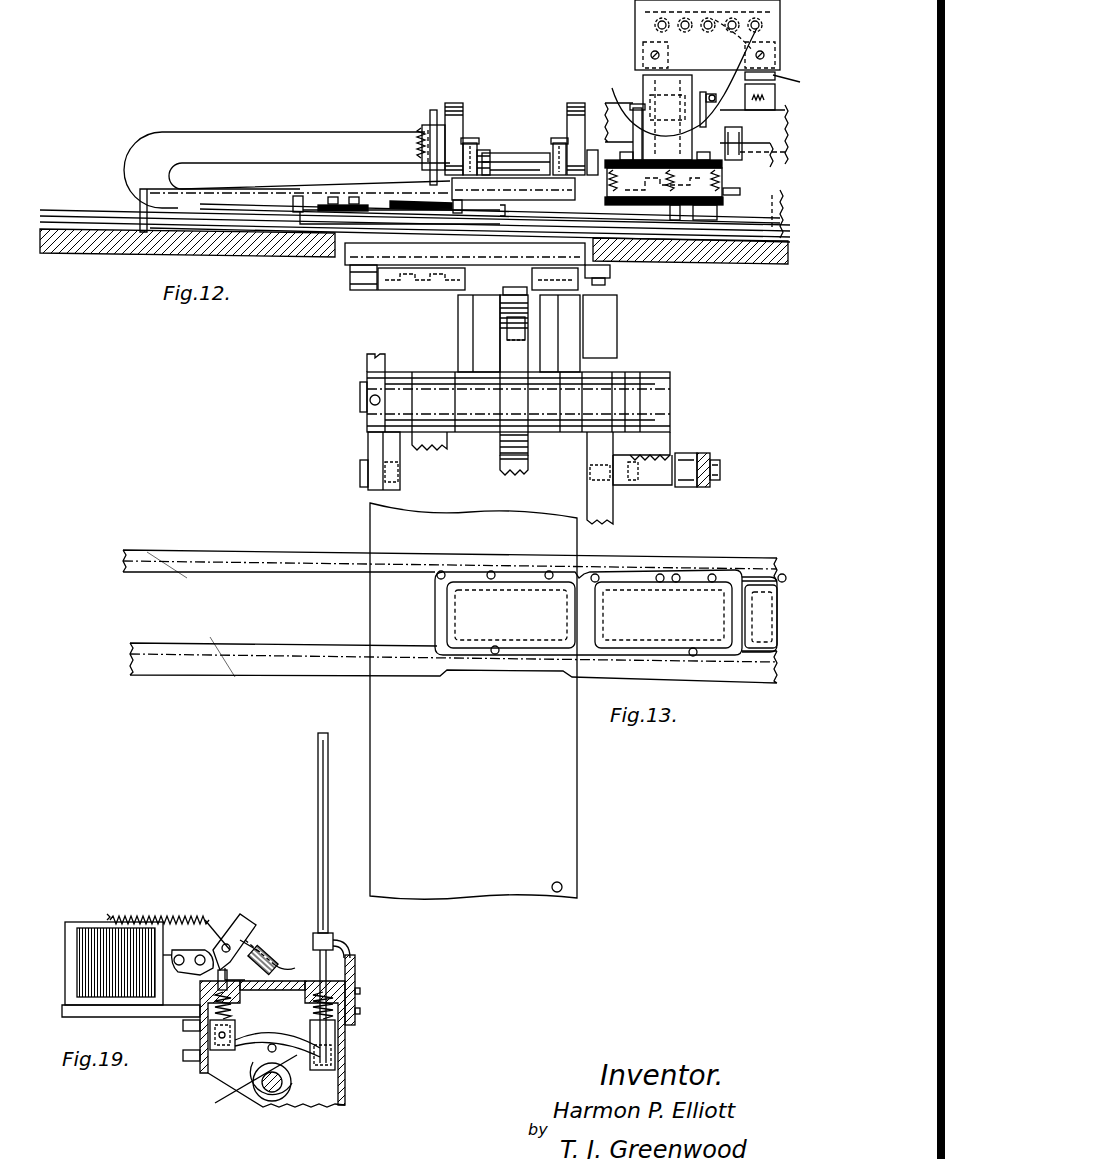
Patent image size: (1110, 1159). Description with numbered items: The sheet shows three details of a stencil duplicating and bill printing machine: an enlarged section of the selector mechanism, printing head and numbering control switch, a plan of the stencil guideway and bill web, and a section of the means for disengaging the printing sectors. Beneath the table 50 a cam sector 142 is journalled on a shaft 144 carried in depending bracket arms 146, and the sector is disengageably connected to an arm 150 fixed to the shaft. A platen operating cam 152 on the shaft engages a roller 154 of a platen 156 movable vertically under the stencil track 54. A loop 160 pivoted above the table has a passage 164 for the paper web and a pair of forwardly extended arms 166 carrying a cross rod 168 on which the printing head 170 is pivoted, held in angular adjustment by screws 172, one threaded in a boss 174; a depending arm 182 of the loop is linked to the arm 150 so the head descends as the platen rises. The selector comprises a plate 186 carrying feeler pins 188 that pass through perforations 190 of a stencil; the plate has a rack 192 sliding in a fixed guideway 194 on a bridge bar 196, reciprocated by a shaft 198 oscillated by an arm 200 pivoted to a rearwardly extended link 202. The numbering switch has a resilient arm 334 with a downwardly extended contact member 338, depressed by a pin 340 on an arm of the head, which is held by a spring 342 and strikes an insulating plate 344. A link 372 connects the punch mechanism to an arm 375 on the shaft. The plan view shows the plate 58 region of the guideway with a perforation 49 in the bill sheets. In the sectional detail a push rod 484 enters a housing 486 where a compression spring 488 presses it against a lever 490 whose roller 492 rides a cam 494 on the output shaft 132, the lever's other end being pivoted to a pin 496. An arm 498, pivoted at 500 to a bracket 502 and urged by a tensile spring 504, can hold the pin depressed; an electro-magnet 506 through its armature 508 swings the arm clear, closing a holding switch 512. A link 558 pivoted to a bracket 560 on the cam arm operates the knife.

In FIG. 13, the perforation 49 is at (563, 886).
In FIG. 12, the table 50 is at (76, 245).
In FIG. 12, the stencil track 54 is at (72, 215).
In FIG. 13, the stencil track 54 is at (228, 648).
In FIG. 12, the plate 58 is at (538, 227).
In FIG. 13, the plate 58 is at (587, 574).
In FIG. 19, the output shaft 132 is at (266, 1090).
In FIG. 12, the cam sector 142 is at (605, 511).
In FIG. 12, the shaft 144 is at (358, 398).
In FIG. 12, the bracket arms 146 is at (470, 328).
In FIG. 12, the arm 150 is at (517, 459).
In FIG. 12, the platen operating cam 152 is at (513, 328).
In FIG. 12, the roller 154 is at (507, 290).
In FIG. 12, the platen 156 is at (363, 252).
In FIG. 12, the loop 160 is at (212, 142).
In FIG. 12, the passage 164 is at (247, 168).
In FIG. 12, the arms 166 is at (457, 104).
In FIG. 12, the cross rod 168 is at (518, 160).
In FIG. 12, the printing head 170 is at (540, 192).
In FIG. 12, the screws 172 is at (468, 143).
In FIG. 12, the boss 174 is at (478, 150).
In FIG. 12, the depending arm 182 is at (530, 330).
In FIG. 12, the plate 186 is at (740, 185).
In FIG. 12, the feeler pins 188 is at (717, 216).
In FIG. 13, the perforations 190 is at (492, 572).
In FIG. 12, the rack 192 is at (670, 73).
In FIG. 12, the guideway 194 is at (690, 92).
In FIG. 12, the bridge bar 196 is at (773, 193).
In FIG. 12, the shaft 198 is at (684, 84).
In FIG. 12, the arm 200 is at (710, 115).
In FIG. 12, the link 202 is at (735, 102).
In FIG. 12, the resilient arm 334 is at (373, 205).
In FIG. 12, the contact member 338 is at (448, 214).
In FIG. 12, the pin 340 is at (434, 125).
In FIG. 12, the spring 342 is at (418, 135).
In FIG. 12, the insulating plate 344 is at (405, 203).
In FIG. 12, the link 372 is at (367, 358).
In FIG. 12, the arm 375 is at (390, 443).
In FIG. 19, the push rod 484 is at (320, 806).
In FIG. 19, the housing 486 is at (345, 1072).
In FIG. 19, the compression spring 488 is at (350, 990).
In FIG. 19, the lever 490 is at (283, 1042).
In FIG. 19, the roller 492 is at (268, 1054).
In FIG. 19, the cam 494 is at (290, 1080).
In FIG. 19, the pin 496 is at (205, 1000).
In FIG. 19, the arm 498 is at (182, 950).
In FIG. 19, the pivot 500 is at (206, 950).
In FIG. 19, the bracket 502 is at (238, 950).
In FIG. 19, the tensile spring 504 is at (160, 918).
In FIG. 19, the electro-magnet 506 is at (92, 953).
In FIG. 19, the armature 508 is at (188, 953).
In FIG. 19, the circuit closing switch 512 is at (268, 958).
In FIG. 12, the link 558 is at (705, 453).
In FIG. 12, the bracket 560 is at (670, 453).